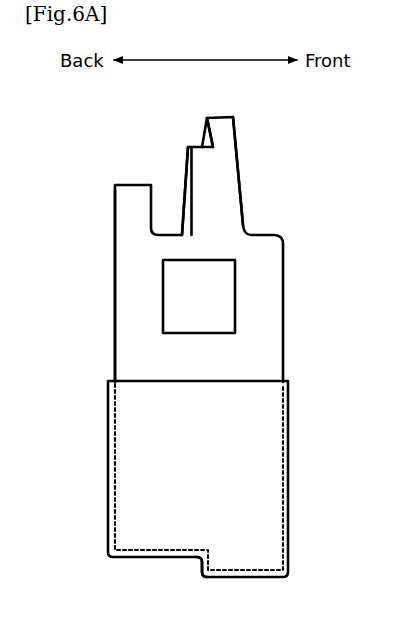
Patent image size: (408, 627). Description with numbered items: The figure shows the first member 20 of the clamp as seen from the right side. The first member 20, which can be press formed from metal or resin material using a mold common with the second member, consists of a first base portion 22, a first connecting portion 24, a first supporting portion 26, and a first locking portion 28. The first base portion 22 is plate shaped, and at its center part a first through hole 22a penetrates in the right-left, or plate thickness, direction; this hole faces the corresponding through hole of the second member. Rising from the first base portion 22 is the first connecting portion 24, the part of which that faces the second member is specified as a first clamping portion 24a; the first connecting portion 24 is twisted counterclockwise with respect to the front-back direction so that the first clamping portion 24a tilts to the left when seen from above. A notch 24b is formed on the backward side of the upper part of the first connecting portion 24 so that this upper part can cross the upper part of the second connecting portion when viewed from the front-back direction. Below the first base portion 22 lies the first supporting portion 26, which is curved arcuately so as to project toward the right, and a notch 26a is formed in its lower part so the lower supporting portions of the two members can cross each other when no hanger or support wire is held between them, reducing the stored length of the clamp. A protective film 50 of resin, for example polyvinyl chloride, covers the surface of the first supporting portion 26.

The first member 20 is at (199, 232).
The first base portion 22 is at (125, 343).
The first through hole 22a is at (222, 332).
The first connecting portion 24 is at (233, 182).
The first clamping portion 24a is at (186, 177).
The notch 24b is at (200, 141).
The first supporting portion 26 is at (273, 423).
The notch 26a is at (189, 563).
The first locking portion 28 is at (120, 213).
The protective film 50 is at (290, 392).